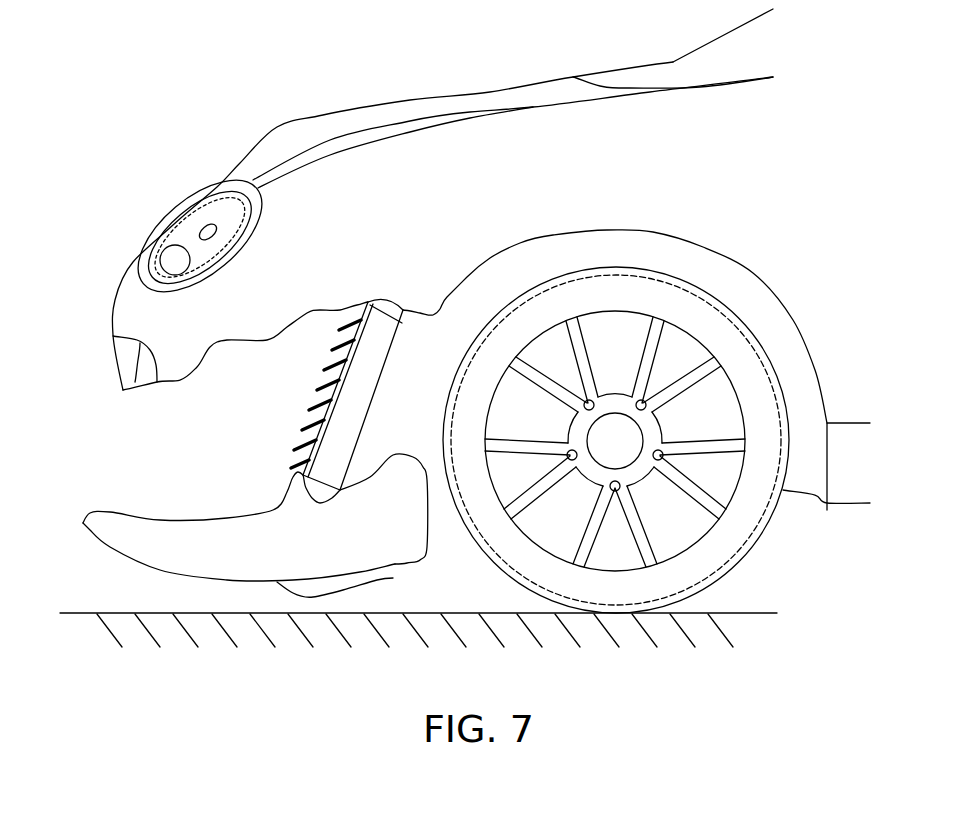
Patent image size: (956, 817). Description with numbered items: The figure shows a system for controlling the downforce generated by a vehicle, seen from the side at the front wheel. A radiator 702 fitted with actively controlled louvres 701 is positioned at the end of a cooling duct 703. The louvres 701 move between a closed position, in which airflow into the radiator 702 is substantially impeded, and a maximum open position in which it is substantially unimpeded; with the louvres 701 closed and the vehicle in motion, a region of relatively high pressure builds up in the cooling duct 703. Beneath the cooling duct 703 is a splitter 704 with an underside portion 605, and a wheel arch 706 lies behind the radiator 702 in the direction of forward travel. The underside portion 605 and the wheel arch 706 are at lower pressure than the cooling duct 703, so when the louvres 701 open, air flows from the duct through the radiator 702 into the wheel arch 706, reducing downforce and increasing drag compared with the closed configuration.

The underside portion 605 is at (384, 580).
The louvres 701 is at (316, 405).
The radiator 702 is at (380, 362).
The cooling duct 703 is at (214, 449).
The splitter 704 is at (84, 522).
The wheel arch 706 is at (632, 260).